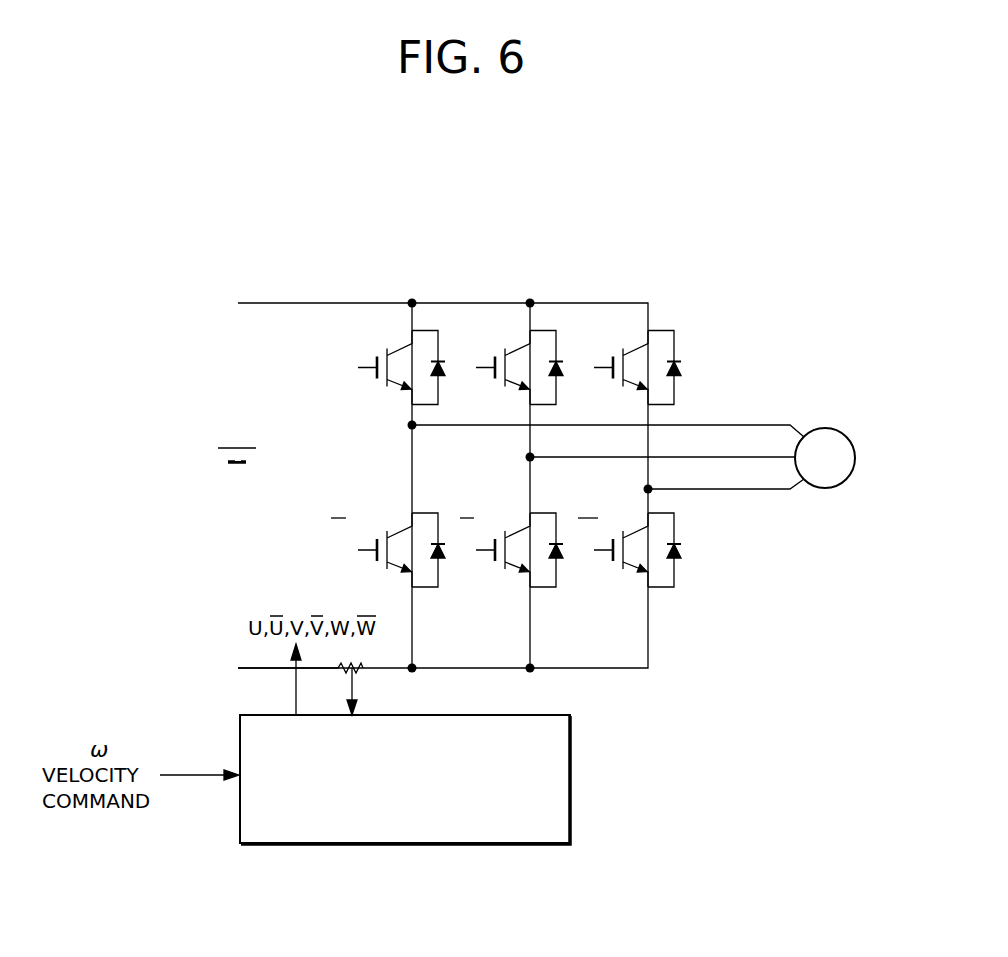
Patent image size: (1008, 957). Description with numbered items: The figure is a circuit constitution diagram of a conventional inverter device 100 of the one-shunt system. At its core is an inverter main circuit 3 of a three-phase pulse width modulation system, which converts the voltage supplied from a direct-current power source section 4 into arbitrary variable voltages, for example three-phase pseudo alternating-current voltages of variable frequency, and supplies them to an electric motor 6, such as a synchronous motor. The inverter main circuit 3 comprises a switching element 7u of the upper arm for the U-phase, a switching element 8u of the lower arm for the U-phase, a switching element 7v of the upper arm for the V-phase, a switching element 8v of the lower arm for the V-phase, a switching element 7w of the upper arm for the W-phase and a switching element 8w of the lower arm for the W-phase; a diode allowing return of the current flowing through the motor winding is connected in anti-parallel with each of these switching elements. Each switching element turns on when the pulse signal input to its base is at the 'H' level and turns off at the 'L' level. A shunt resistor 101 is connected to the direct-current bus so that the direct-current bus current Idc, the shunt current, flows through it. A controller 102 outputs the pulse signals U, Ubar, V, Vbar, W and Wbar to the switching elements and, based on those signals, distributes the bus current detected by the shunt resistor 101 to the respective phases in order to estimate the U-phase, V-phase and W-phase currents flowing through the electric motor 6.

The inverter main circuit 3 is at (537, 270).
The direct-current power source section 4 is at (222, 446).
The electric motor 6 is at (822, 428).
The switching element of upper arm for U-phase 7u is at (384, 345).
The switching element of upper arm for V-phase 7v is at (502, 345).
The switching element of upper arm for W-phase 7w is at (620, 345).
The switching element of lower arm for U-phase 8u is at (378, 530).
The switching element of lower arm for V-phase 8v is at (500, 528).
The switching element of lower arm for W-phase 8w is at (619, 570).
The inverter device 100 is at (680, 309).
The shunt resistor 101 is at (343, 672).
The controller 102 is at (572, 780).